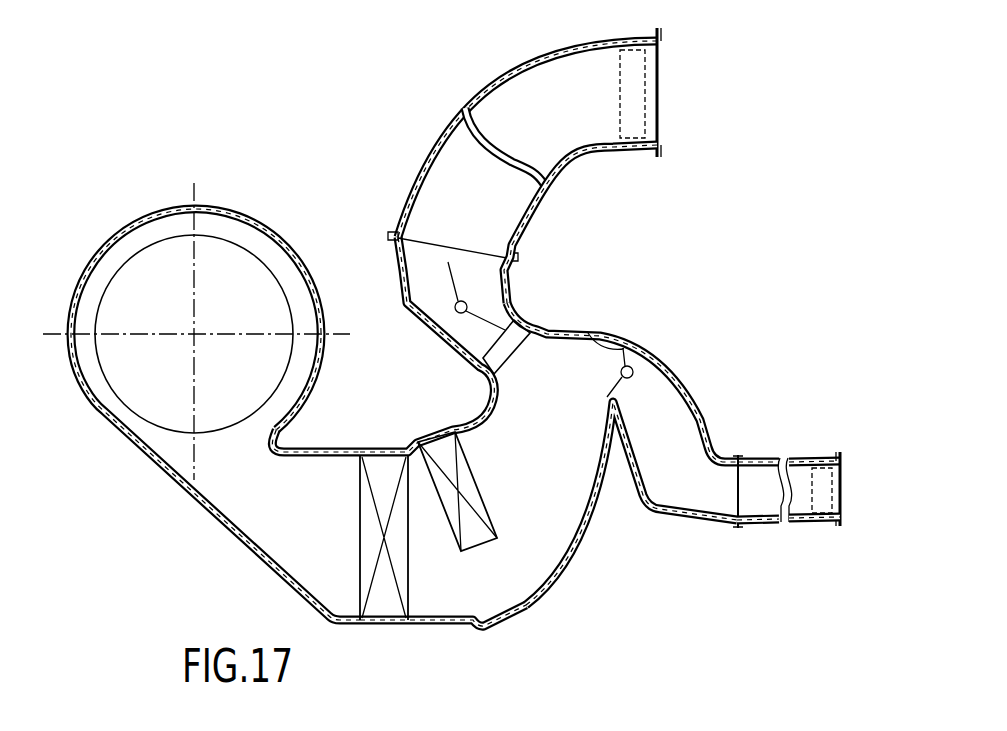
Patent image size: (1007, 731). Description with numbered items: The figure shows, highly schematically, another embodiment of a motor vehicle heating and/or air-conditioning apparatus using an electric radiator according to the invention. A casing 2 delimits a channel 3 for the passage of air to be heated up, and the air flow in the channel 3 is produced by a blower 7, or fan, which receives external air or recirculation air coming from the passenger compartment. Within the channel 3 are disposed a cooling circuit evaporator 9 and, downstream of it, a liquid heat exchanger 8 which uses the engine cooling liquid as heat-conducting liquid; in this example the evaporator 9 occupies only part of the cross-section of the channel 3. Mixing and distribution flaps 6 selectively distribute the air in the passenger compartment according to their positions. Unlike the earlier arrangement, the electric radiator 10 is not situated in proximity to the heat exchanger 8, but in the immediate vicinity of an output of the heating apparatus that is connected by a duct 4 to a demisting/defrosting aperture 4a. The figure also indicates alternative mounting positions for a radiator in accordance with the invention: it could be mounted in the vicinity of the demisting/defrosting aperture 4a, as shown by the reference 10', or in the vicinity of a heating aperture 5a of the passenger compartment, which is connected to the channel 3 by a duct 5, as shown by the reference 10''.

The casing 2 is at (184, 513).
The channel 3 is at (279, 524).
The duct 4 is at (694, 92).
The demisting/defrosting aperture 4a is at (530, 208).
The duct 5 is at (851, 479).
The heating aperture 5a is at (797, 522).
The mixing and distribution flaps 6 is at (588, 333).
The blower 7 is at (132, 302).
The liquid heat exchanger 8 is at (473, 537).
The cooling circuit evaporator 9 is at (360, 505).
The electric radiator 10 is at (497, 324).
The radiator 10' is at (632, 123).
The radiator 10'' is at (812, 458).